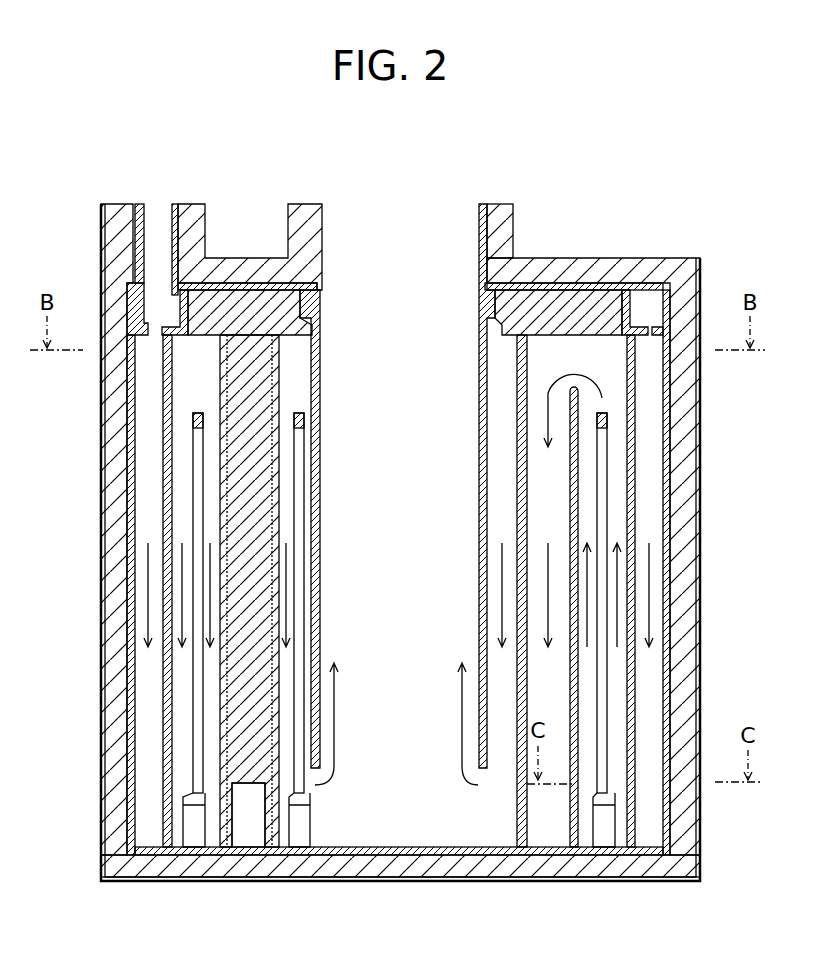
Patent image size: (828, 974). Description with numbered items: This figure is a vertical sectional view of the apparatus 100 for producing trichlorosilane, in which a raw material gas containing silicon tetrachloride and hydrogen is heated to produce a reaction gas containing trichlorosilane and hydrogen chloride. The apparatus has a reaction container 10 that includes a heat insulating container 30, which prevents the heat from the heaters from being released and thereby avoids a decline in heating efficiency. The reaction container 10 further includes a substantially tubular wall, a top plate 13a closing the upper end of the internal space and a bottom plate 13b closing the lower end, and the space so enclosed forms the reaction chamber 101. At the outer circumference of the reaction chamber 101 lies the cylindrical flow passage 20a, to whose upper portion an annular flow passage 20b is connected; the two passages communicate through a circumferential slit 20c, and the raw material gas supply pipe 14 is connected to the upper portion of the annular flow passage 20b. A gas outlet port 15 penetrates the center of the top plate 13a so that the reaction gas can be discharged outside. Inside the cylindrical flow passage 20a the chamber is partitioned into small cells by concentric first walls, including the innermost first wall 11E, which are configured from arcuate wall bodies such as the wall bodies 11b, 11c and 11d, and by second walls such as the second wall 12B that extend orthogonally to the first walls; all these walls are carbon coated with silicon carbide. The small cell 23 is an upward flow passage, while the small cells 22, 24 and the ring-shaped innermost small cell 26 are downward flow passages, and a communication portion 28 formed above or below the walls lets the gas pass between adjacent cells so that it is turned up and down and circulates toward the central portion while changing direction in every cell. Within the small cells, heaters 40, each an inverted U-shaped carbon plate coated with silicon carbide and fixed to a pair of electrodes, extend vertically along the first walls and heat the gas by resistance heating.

The apparatus for producing trichlorosilane 100 is at (556, 172).
The reaction container 10 is at (98, 808).
The cylindrical flow passage 20a is at (146, 444).
The annular flow passage 20b is at (147, 310).
The slit 20c is at (156, 286).
The raw material gas supply pipe 14 is at (143, 230).
The second wall 12B is at (265, 345).
The arcuate wall body 11d is at (285, 348).
The arcuate wall body 11c is at (210, 345).
The first wall 11E is at (316, 490).
The heater 40 is at (299, 412).
The reaction chamber 101 is at (186, 403).
The small cell 22 is at (177, 590).
The bottom plate 13b is at (211, 850).
The communication portion 28 is at (255, 838).
The small cell 24 is at (550, 830).
The gas outlet port 15 is at (478, 232).
The heat insulating container 30 is at (684, 485).
The top plate 13a is at (578, 300).
The small cell 26 is at (490, 543).
The arcuate wall body 11b is at (637, 390).
The small cell 23 is at (617, 667).